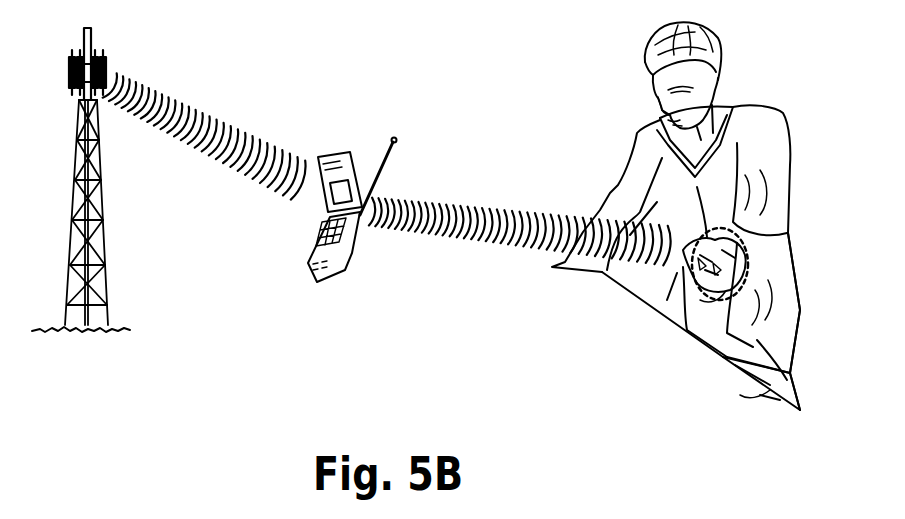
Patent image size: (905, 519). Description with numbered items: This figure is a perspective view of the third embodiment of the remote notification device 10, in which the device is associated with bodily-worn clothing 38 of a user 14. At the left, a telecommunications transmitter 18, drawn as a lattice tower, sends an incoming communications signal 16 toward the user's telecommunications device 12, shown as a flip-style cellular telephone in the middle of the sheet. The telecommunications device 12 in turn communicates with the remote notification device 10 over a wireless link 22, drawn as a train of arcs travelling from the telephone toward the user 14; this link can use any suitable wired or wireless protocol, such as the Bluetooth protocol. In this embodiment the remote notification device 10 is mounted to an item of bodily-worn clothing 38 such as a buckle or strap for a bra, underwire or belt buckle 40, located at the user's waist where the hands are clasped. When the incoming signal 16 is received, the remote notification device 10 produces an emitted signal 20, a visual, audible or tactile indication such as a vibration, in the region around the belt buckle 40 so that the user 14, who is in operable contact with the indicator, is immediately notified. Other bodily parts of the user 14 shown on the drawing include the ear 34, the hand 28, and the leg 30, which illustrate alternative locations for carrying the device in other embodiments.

The remote notification device 10 is at (717, 267).
The telecommunications device 12 is at (334, 152).
The user 14 is at (774, 109).
The incoming communications signal 16 is at (181, 107).
The telecommunications transmitter 18 is at (75, 137).
The emitted signal 20 is at (740, 236).
The wireless link 22 is at (451, 207).
The user's hand 28 is at (773, 370).
The leg 30 is at (788, 322).
The ear 34 is at (722, 80).
The bodily-worn clothing 38 is at (770, 147).
The belt buckle 40 is at (703, 262).